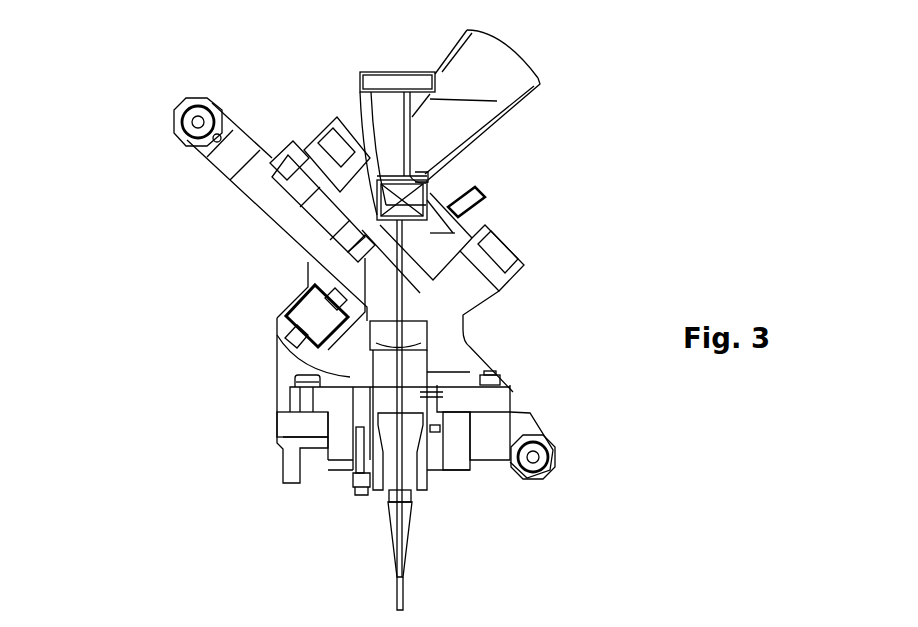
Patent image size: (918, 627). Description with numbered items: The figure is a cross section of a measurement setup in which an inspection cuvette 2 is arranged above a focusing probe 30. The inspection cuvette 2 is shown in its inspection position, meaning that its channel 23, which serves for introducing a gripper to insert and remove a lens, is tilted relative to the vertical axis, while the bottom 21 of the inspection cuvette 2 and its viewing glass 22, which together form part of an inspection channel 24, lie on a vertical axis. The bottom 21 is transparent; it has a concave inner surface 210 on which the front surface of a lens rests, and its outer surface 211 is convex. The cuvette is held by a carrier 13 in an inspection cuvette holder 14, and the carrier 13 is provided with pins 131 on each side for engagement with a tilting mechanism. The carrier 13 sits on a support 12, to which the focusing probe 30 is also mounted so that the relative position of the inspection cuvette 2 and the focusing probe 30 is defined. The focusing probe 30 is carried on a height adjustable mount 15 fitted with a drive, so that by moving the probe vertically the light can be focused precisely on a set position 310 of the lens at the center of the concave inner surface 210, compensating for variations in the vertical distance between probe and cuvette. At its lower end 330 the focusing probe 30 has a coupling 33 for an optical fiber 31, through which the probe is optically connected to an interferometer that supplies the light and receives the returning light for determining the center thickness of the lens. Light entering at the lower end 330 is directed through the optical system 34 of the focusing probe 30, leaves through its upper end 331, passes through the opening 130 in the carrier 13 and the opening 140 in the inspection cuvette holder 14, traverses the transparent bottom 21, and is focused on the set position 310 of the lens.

The inspection cuvette 2 is at (447, 113).
The support 12 is at (278, 383).
The carrier 13 is at (460, 293).
The inspection cuvette holder 14 is at (480, 232).
The height adjustable mount 15 is at (363, 512).
The bottom 21 is at (430, 183).
The viewing glass 22 is at (388, 123).
The channel 23 is at (505, 76).
The inspection channel 24 is at (352, 130).
The focusing probe 30 is at (308, 375).
The optical fiber 31 is at (403, 593).
The coupling 33 is at (410, 505).
The optical system 34 is at (483, 353).
The opening 130 is at (310, 283).
The pins 131 is at (187, 122).
The opening 140 is at (455, 233).
The concave inner surface 210 is at (430, 168).
The outer surface 211 is at (338, 230).
The set position 310 is at (212, 139).
The lower end 330 is at (417, 495).
The upper end 331 is at (468, 332).